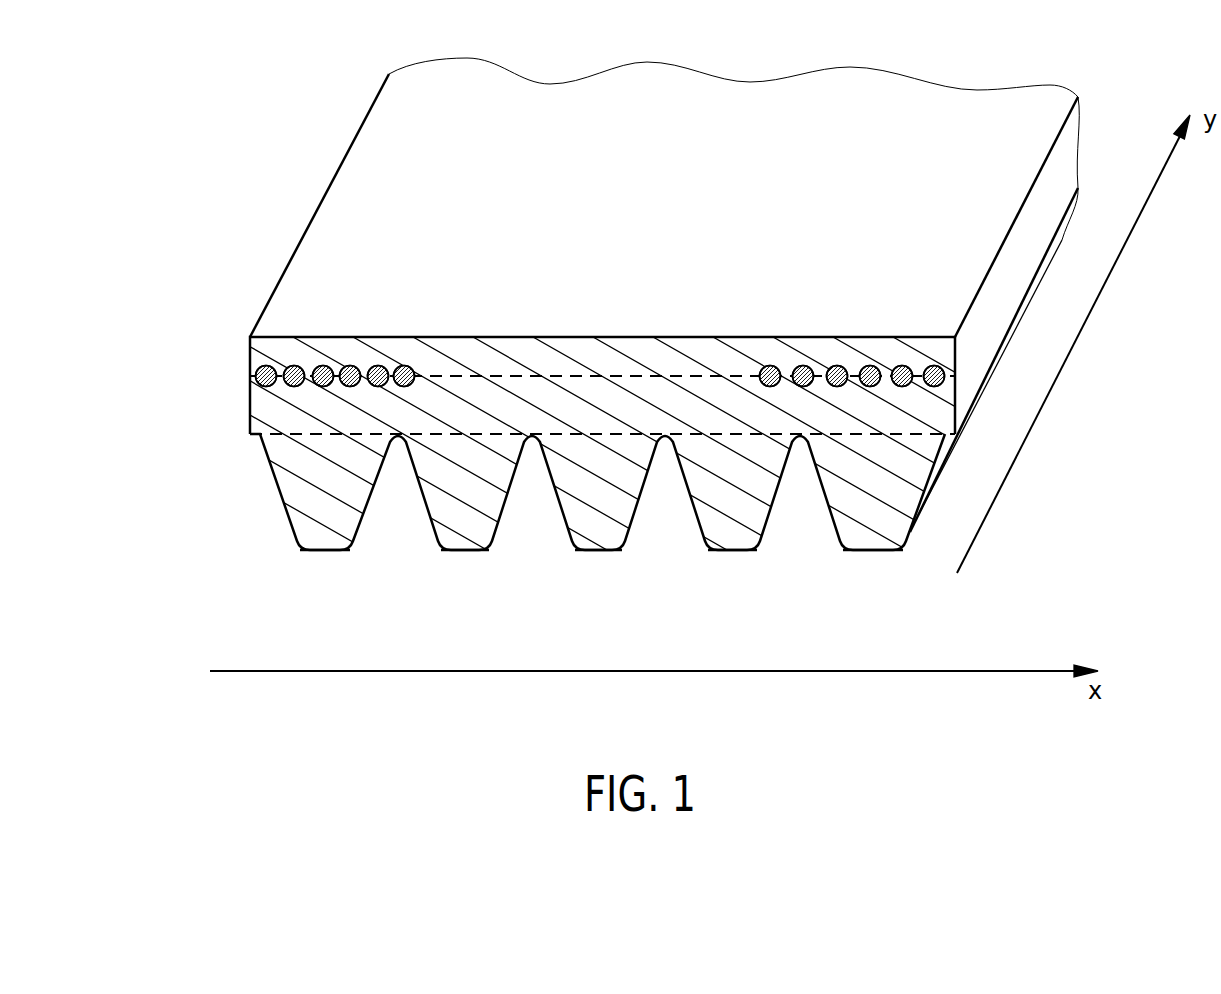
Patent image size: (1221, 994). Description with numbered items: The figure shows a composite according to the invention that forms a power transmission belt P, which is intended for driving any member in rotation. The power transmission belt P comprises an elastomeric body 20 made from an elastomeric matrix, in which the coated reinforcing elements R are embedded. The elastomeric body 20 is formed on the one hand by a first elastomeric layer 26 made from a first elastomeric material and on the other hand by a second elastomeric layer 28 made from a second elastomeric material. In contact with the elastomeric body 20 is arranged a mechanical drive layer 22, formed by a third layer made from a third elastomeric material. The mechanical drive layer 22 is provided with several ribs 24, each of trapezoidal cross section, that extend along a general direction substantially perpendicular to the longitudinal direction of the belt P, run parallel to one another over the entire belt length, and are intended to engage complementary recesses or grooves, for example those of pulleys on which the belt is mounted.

The power transmission belt P is at (610, 338).
The elastomeric body 20 is at (610, 351).
The mechanical drive layer 22 is at (538, 521).
The ribs 24 is at (606, 586).
The first elastomeric layer 26 is at (540, 326).
The second elastomeric layer 28 is at (227, 421).
The coated reinforcing elements R is at (325, 366).